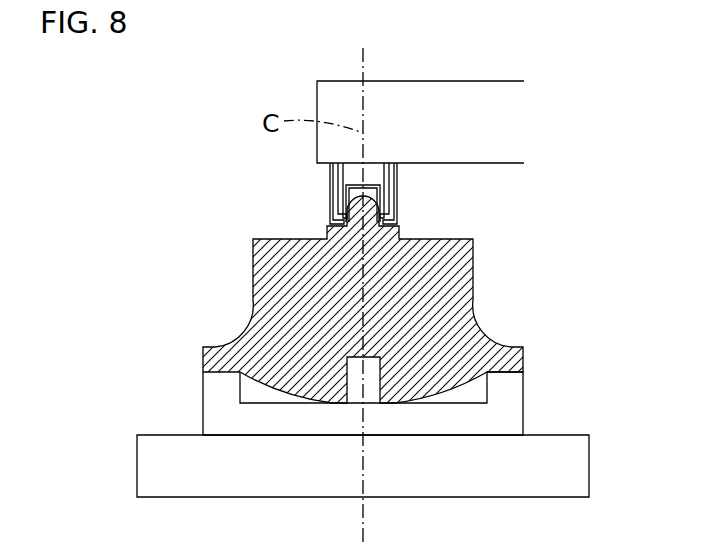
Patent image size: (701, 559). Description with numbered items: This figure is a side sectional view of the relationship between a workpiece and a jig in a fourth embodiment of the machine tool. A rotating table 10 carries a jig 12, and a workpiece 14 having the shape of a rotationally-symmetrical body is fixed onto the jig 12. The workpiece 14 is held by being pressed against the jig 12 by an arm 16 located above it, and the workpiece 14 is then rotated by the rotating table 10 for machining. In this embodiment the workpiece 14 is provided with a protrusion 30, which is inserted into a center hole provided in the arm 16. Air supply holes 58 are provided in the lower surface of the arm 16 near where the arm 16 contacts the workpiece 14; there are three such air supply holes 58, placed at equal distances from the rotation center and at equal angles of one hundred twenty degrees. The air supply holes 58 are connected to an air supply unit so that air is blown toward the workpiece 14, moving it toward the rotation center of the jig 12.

The rotating table 10 is at (580, 462).
The jig 12 is at (503, 415).
The workpiece 14 is at (273, 272).
The arm 16 is at (423, 81).
The protrusion 30 is at (368, 198).
The air supply holes 58 is at (338, 190).